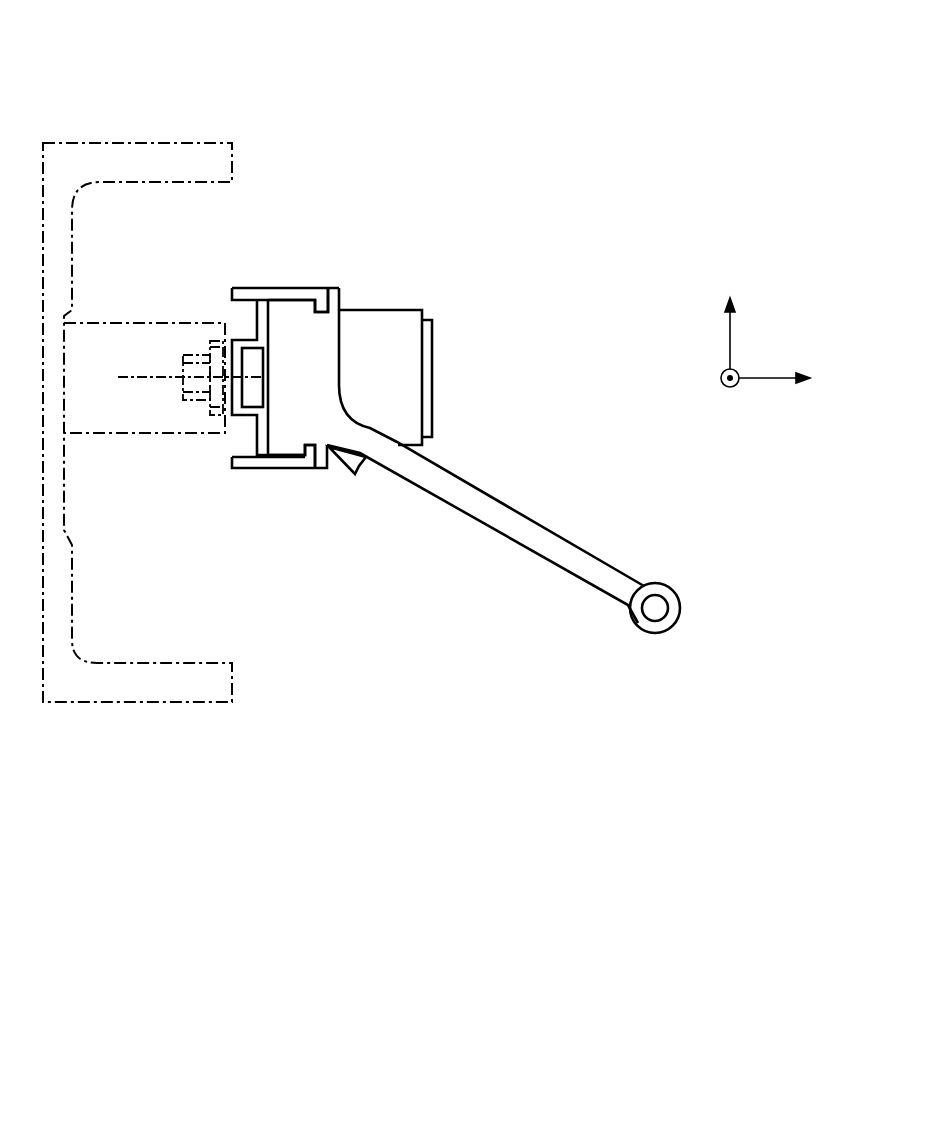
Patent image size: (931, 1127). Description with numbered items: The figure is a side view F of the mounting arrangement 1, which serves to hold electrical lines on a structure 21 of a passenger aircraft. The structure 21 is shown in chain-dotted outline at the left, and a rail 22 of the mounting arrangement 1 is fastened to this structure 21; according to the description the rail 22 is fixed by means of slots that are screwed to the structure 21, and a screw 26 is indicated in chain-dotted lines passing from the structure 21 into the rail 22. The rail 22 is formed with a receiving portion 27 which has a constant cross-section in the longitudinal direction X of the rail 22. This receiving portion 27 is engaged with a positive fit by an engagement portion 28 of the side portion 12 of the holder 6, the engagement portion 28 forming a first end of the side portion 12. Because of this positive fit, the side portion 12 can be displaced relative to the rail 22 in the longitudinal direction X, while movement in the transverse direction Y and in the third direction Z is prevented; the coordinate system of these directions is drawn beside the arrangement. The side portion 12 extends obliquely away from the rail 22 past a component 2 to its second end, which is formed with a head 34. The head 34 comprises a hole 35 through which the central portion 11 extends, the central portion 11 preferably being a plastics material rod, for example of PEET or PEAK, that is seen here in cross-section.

The mounting arrangement 1 is at (146, 119).
The drive motor 2 is at (383, 318).
The holder 6 is at (478, 479).
The central portion 11 is at (663, 627).
The side portion 12 is at (525, 540).
The structure 21 is at (62, 658).
The rail 22 is at (246, 478).
The fastening screw 26 is at (151, 377).
The receiving portion 27 is at (291, 468).
The engagement portion 28 is at (303, 318).
The head 34 is at (667, 622).
The hole 35 is at (638, 625).